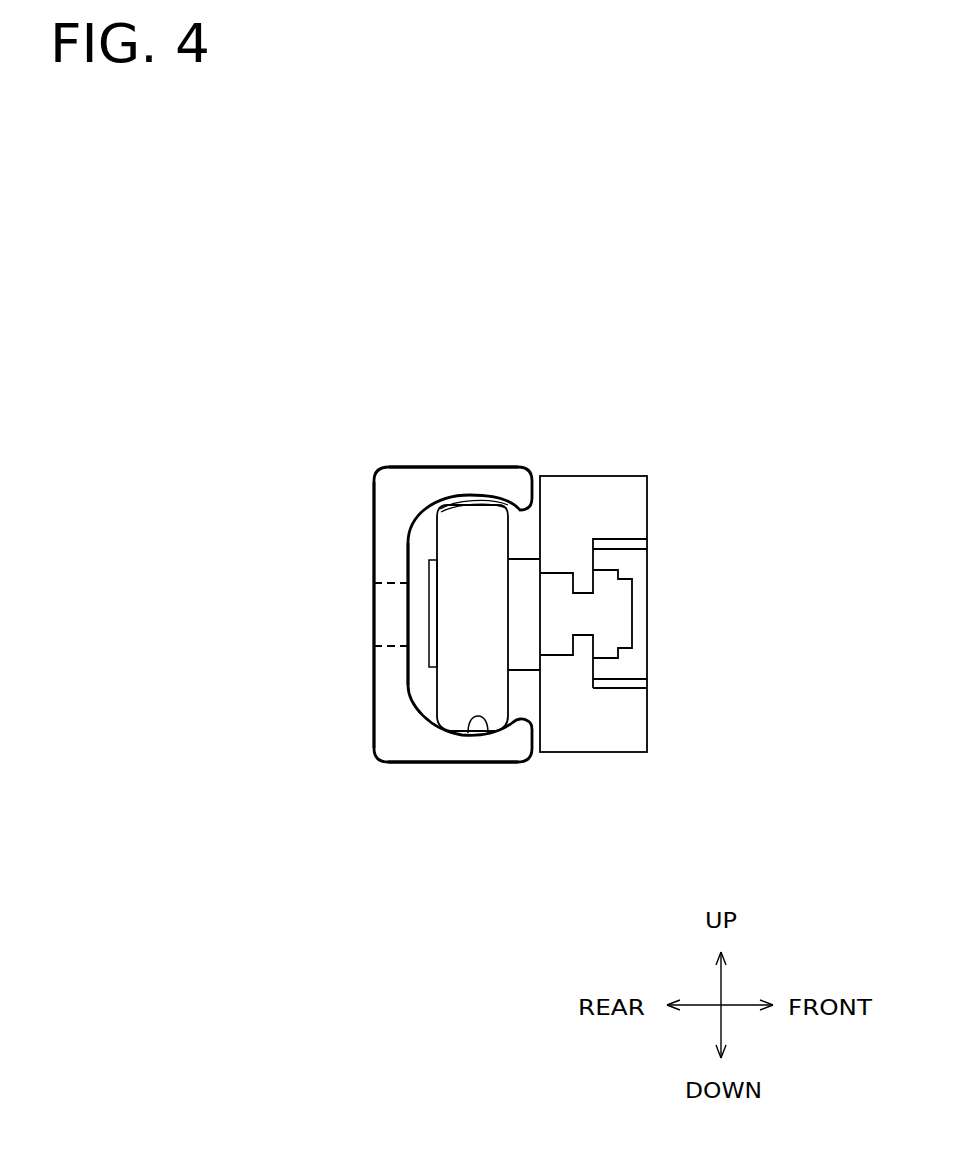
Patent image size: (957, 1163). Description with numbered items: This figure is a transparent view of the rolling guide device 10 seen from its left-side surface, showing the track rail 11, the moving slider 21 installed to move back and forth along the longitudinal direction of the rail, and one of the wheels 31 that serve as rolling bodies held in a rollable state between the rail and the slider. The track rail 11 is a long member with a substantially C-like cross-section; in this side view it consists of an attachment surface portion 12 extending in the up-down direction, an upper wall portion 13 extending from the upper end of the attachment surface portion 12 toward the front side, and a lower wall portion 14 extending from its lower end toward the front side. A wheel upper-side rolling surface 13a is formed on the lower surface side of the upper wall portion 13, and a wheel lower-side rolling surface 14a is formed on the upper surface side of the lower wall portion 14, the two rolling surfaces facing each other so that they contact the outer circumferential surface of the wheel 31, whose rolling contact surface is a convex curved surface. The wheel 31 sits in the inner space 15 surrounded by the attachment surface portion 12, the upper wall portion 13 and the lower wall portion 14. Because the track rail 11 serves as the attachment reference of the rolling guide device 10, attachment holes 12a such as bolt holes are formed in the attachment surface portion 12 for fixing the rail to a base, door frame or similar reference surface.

The rolling guide device 10 is at (729, 378).
The track rail 11 is at (385, 468).
The attachment surface portion 12 is at (390, 540).
The attachment holes 12a is at (390, 582).
The upper wall portion 13 is at (443, 478).
The wheel upper-side rolling surface 13a is at (500, 503).
The lower wall portion 14 is at (443, 750).
The wheel lower-side rolling surface 14a is at (485, 727).
The inner space 15 is at (422, 680).
The moving slider 21 is at (648, 512).
The wheels 31 is at (473, 524).